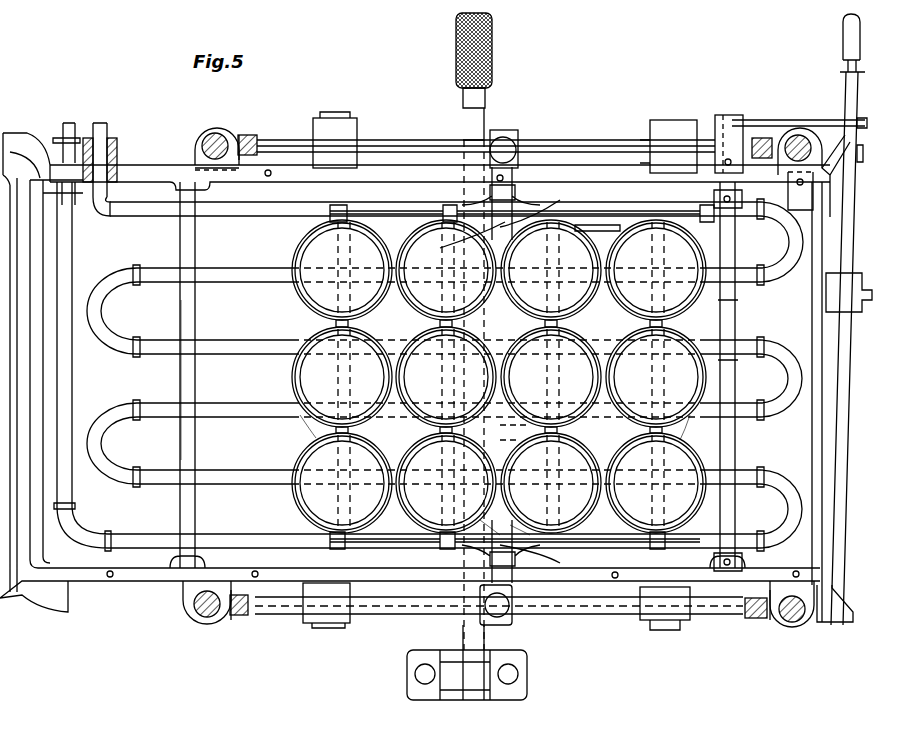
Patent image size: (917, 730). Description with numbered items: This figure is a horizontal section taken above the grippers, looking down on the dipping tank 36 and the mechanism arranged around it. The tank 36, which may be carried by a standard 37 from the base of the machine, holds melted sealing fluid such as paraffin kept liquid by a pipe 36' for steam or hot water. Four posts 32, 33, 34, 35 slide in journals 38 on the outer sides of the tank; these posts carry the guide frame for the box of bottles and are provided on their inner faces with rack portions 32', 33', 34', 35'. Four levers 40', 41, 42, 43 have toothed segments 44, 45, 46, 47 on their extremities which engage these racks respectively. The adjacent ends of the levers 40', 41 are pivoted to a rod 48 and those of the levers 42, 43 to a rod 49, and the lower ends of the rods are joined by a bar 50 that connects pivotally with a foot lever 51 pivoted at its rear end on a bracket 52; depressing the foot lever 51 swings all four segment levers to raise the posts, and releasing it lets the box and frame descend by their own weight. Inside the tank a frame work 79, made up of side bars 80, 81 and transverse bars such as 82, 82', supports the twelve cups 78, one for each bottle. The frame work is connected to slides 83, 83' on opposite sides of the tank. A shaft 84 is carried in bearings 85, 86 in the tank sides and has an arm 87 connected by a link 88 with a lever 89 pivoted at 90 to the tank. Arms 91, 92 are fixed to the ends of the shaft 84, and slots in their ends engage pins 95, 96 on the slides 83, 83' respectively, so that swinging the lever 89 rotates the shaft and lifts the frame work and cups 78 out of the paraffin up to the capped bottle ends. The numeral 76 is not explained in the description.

The foot lever 51 is at (492, 70).
The lever 42 is at (412, 148).
The toothed segment 46 is at (258, 145).
The lever 43 is at (620, 157).
The toothed segment 47 is at (760, 138).
The rod 49 is at (516, 145).
The slide 83' is at (530, 227).
The slide 83 is at (534, 562).
The frame work 79 is at (395, 210).
The arm 92 is at (607, 215).
The bearing 85 is at (718, 198).
The side bar 81 is at (405, 548).
The arm 91 is at (680, 550).
The bearing 86 is at (714, 563).
The pin 96 is at (460, 239).
The side bar 80 is at (598, 231).
The transverse bar 82 is at (334, 376).
The transverse bar 82' is at (444, 376).
The shaft 84 is at (733, 332).
The pipe 36' is at (221, 380).
The dipping tank 36 is at (795, 383).
The cups 78 is at (305, 420).
The ring support 76 is at (682, 420).
The bar 50 is at (498, 440).
The pin 95 is at (500, 535).
The post 35 is at (804, 153).
The rack portion 35' is at (769, 125).
The journals 38 is at (218, 134).
The post 33 is at (196, 147).
The rack portion 33' is at (252, 131).
The arm 87 is at (867, 122).
The link 88 is at (860, 139).
The lever 89 is at (849, 218).
The pivot 90 is at (862, 292).
The standard 37 is at (18, 590).
The lever 40' is at (499, 607).
The lever 41 is at (602, 620).
The toothed segment 44 is at (254, 613).
The toothed segment 45 is at (745, 610).
The post 32 is at (192, 602).
The rack portion 32' is at (216, 617).
The post 34 is at (798, 614).
The rack portion 34' is at (753, 619).
The rod 48 is at (512, 619).
The bracket 52 is at (452, 660).